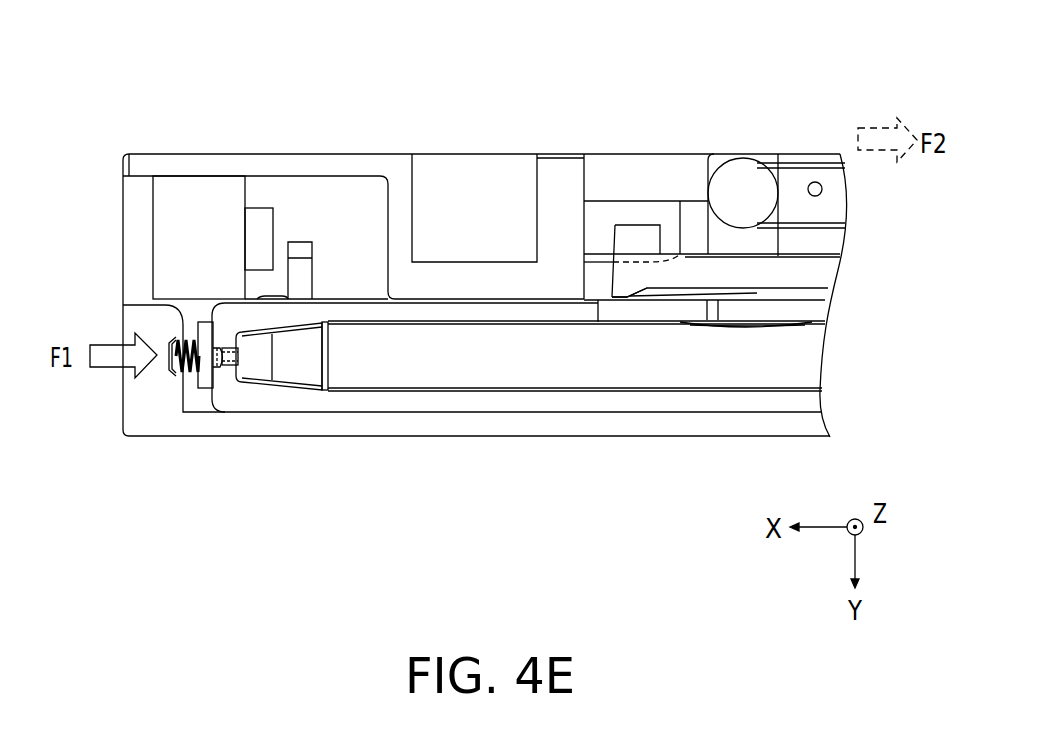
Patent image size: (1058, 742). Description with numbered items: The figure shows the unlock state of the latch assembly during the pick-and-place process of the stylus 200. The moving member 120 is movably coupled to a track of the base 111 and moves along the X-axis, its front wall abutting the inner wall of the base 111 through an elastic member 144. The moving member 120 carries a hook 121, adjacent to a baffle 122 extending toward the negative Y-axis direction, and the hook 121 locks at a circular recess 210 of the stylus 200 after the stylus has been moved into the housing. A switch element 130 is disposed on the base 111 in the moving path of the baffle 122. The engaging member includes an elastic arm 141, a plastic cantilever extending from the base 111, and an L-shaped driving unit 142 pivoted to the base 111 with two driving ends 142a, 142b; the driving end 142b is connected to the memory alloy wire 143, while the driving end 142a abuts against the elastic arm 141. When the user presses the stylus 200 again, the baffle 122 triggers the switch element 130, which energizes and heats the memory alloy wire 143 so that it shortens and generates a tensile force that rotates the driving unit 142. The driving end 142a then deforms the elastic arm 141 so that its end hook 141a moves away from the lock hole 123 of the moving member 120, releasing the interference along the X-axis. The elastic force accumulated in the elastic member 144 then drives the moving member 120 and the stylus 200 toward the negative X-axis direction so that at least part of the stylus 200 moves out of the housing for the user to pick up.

The base 111 is at (280, 153).
The moving member 120 is at (697, 402).
The hook 121 is at (322, 323).
The baffle 122 is at (300, 242).
The lock hole 123 is at (662, 304).
The switch element 130 is at (203, 202).
The elastic arm 141 is at (827, 274).
The end hook 141a is at (621, 297).
The driving unit 142 is at (712, 242).
The driving end 142a is at (645, 262).
The driving end 142b is at (755, 157).
The memory alloy wire 143 is at (843, 172).
The elastic member 144 is at (188, 375).
The stylus 200 is at (800, 367).
The circular recess 210 is at (327, 350).